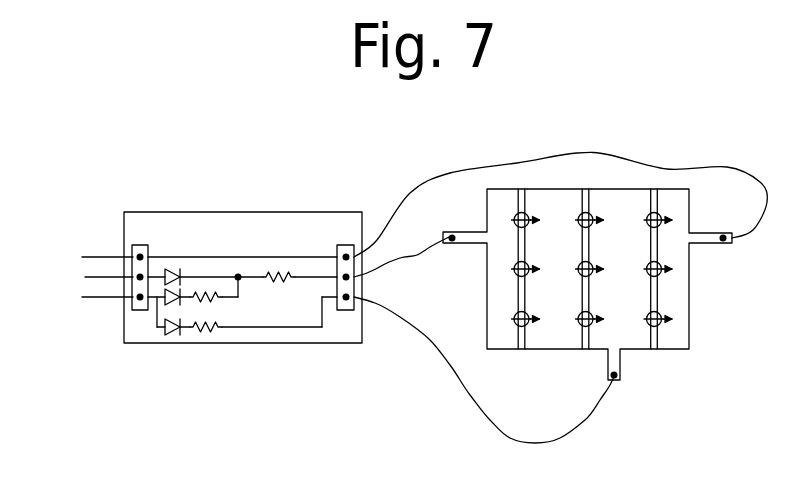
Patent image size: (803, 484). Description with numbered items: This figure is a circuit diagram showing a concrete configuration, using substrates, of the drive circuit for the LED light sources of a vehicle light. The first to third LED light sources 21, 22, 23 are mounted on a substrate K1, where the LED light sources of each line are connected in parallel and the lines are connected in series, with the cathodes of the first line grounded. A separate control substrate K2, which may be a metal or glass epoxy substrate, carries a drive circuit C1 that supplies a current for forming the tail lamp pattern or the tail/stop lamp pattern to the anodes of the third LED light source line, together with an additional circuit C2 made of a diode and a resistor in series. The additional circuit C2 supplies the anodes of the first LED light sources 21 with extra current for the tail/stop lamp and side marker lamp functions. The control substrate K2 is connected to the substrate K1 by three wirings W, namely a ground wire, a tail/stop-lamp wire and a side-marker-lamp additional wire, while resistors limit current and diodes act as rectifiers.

The control substrate K2 is at (267, 199).
The drive circuit C1 is at (193, 231).
The additional circuit C2 is at (185, 347).
The wiring W is at (445, 356).
The substrate K1 is at (530, 348).
The first LED light sources 21 is at (662, 223).
The second LED light sources 22 is at (579, 215).
The third LED light sources 23 is at (545, 320).